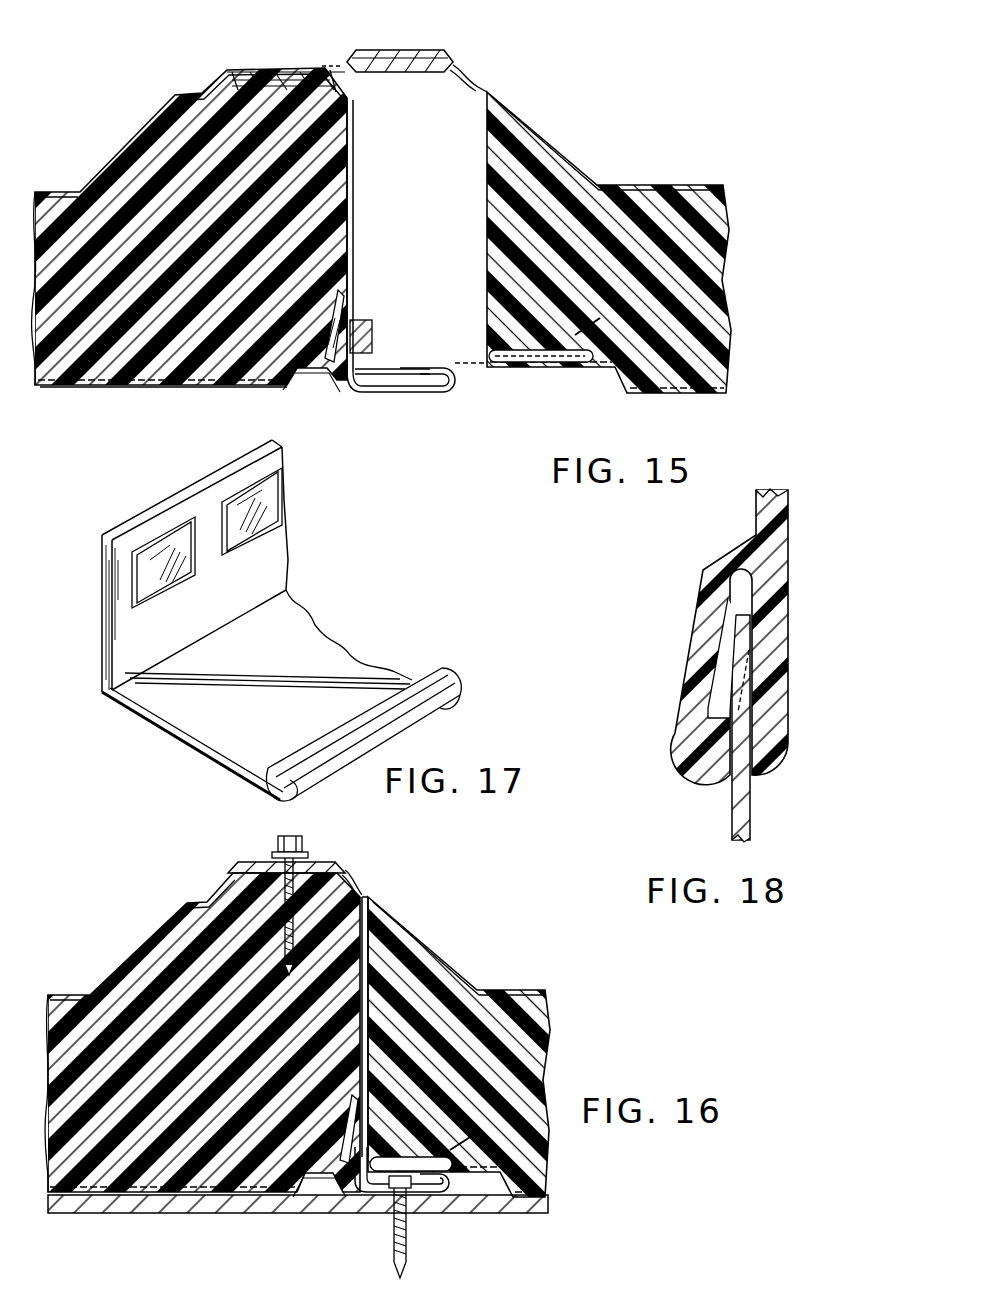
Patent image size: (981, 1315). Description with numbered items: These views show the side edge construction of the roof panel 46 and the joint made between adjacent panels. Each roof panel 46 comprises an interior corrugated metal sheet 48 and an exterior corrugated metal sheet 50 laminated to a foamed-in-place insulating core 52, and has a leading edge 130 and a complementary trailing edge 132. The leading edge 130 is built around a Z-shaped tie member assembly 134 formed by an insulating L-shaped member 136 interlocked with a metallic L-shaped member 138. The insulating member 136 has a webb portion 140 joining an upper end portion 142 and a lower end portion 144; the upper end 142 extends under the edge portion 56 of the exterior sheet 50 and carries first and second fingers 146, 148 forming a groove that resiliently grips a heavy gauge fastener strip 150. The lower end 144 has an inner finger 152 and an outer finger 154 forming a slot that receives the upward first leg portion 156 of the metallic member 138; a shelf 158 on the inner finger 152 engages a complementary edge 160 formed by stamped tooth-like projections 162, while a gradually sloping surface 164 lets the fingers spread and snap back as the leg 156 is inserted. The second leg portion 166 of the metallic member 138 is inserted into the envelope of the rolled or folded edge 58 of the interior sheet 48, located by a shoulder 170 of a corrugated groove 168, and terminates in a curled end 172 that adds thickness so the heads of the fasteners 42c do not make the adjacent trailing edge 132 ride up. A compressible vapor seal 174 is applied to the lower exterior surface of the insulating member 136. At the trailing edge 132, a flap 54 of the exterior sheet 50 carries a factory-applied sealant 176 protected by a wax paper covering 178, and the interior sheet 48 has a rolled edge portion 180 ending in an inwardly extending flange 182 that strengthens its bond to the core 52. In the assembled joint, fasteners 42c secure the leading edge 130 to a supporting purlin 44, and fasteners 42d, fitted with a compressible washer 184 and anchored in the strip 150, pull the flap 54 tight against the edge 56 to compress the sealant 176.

In FIG. 16, the fastener 42c is at (393, 1240).
In FIG. 16, the fastener 42d is at (305, 845).
In FIG. 16, the supporting purlin 44 is at (468, 1214).
In FIG. 15, the roof panel 46 is at (40, 387).
In FIG. 16, the roof panel 46 is at (52, 1215).
In FIG. 15, the interior corrugated metal sheet 48 is at (95, 387).
In FIG. 16, the interior corrugated metal sheet 48 is at (145, 1214).
In FIG. 15, the exterior corrugated metal sheet 50 is at (108, 152).
In FIG. 16, the exterior corrugated metal sheet 50 is at (120, 960).
In FIG. 15, the insulating core 52 is at (68, 195).
In FIG. 16, the insulating core 52 is at (68, 1000).
In FIG. 15, the flap 54 is at (452, 58).
In FIG. 16, the flap 54 is at (352, 882).
In FIG. 15, the edge portion 56 is at (246, 66).
In FIG. 16, the edge portion 56 is at (240, 866).
In FIG. 15, the rolled or folded edge 58 is at (450, 386).
In FIG. 16, the rolled or folded edge 58 is at (458, 1192).
In FIG. 15, the leading edge 130 is at (381, 194).
In FIG. 15, the trailing edge 132 is at (464, 236).
In FIG. 15, the Z-shaped tie member assembly 134 is at (357, 240).
In FIG. 18, the Z-shaped tie member assembly 134 is at (755, 632).
In FIG. 15, the L-shaped insulating member 136 is at (355, 150).
In FIG. 18, the L-shaped insulating member 136 is at (790, 500).
In FIG. 16, the L-shaped insulating member 136 is at (365, 1027).
In FIG. 15, the L-shaped metallic member 138 is at (397, 271).
In FIG. 17, the L-shaped metallic member 138 is at (265, 620).
In FIG. 18, the L-shaped metallic member 138 is at (712, 720).
In FIG. 16, the L-shaped metallic member 138 is at (448, 1076).
In FIG. 15, the webb portion 140 is at (330, 195).
In FIG. 16, the webb portion 140 is at (345, 990).
In FIG. 15, the upper end portion 142 is at (308, 115).
In FIG. 16, the upper end portion 142 is at (378, 900).
In FIG. 15, the lower end portion 144 is at (328, 278).
In FIG. 18, the lower end portion 144 is at (730, 555).
In FIG. 16, the lower end portion 144 is at (340, 1065).
In FIG. 15, the first finger 146 is at (278, 68).
In FIG. 16, the first finger 146 is at (268, 893).
In FIG. 15, the second finger 148 is at (250, 100).
In FIG. 16, the second finger 148 is at (283, 925).
In FIG. 15, the fastener strip 150 is at (233, 68).
In FIG. 16, the fastener strip 150 is at (305, 905).
In FIG. 15, the inner finger 152 is at (325, 340).
In FIG. 18, the inner finger 152 is at (700, 607).
In FIG. 16, the inner finger 152 is at (340, 1138).
In FIG. 15, the outer finger 154 is at (325, 352).
In FIG. 18, the outer finger 154 is at (790, 695).
In FIG. 16, the outer finger 154 is at (340, 1155).
In FIG. 17, the first leg portion 156 is at (100, 602).
In FIG. 18, the first leg portion 156 is at (732, 790).
In FIG. 18, the shelf 158 is at (710, 712).
In FIG. 18, the edge 160 is at (720, 705).
In FIG. 15, the tooth-like projections 162 is at (330, 320).
In FIG. 17, the tooth-like projections 162 is at (178, 530).
In FIG. 18, the tooth-like projections 162 is at (728, 682).
In FIG. 16, the tooth-like projections 162 is at (340, 1120).
In FIG. 15, the gradually sloping surface 164 is at (333, 300).
In FIG. 18, the gradually sloping surface 164 is at (726, 657).
In FIG. 16, the gradually sloping surface 164 is at (340, 1100).
In FIG. 15, the second leg portion 166 is at (400, 394).
In FIG. 17, the second leg portion 166 is at (182, 742).
In FIG. 16, the second leg portion 166 is at (415, 1194).
In FIG. 15, the corrugated groove 168 is at (297, 385).
In FIG. 16, the corrugated groove 168 is at (296, 1192).
In FIG. 15, the shoulder 170 is at (318, 392).
In FIG. 16, the shoulder 170 is at (318, 1196).
In FIG. 15, the curled end 172 is at (432, 366).
In FIG. 17, the curled end 172 is at (448, 672).
In FIG. 16, the curled end 172 is at (478, 1166).
In FIG. 15, the vapor seal 174 is at (360, 356).
In FIG. 16, the vapor seal 174 is at (385, 1120).
In FIG. 15, the sealant 176 is at (388, 52).
In FIG. 16, the sealant 176 is at (332, 866).
In FIG. 15, the covering 178 is at (470, 80).
In FIG. 15, the rolled edge portion 180 is at (555, 352).
In FIG. 16, the rolled edge portion 180 is at (425, 1160).
In FIG. 15, the inwardly extending flange 182 is at (590, 315).
In FIG. 16, the inwardly extending flange 182 is at (470, 1142).
In FIG. 16, the compressible washer 184 is at (276, 848).